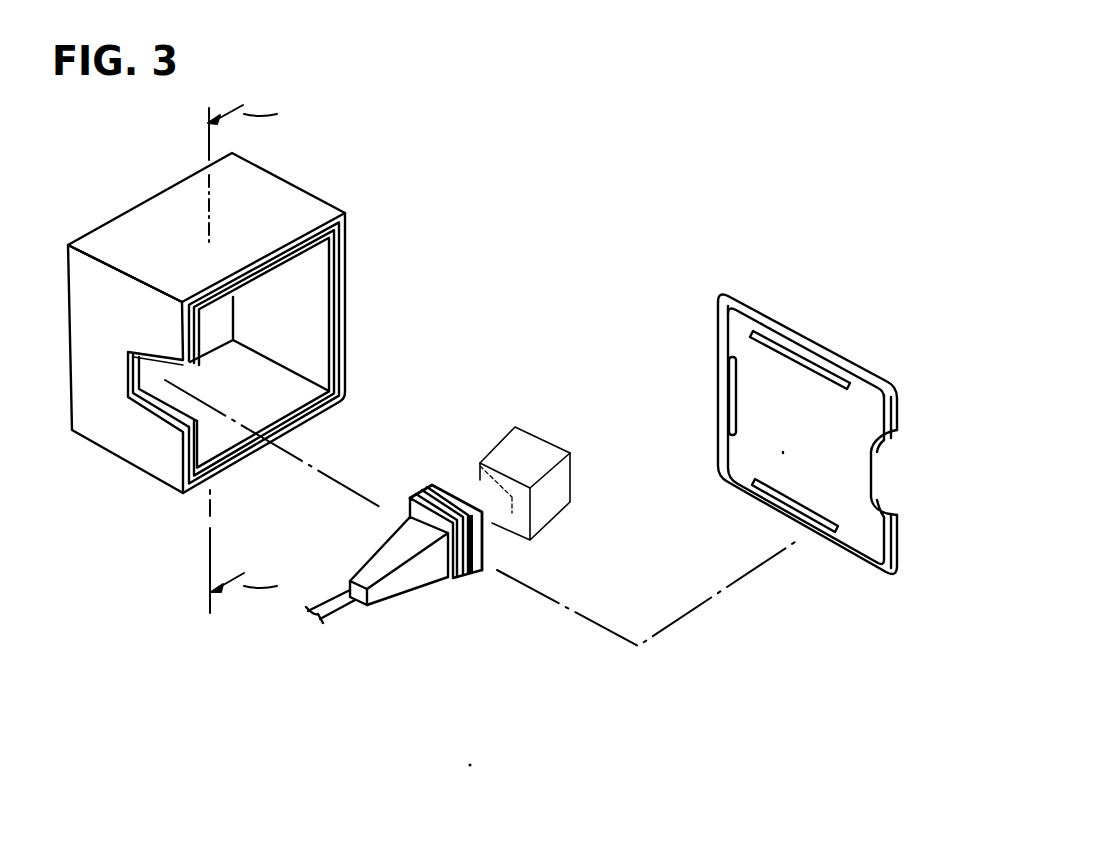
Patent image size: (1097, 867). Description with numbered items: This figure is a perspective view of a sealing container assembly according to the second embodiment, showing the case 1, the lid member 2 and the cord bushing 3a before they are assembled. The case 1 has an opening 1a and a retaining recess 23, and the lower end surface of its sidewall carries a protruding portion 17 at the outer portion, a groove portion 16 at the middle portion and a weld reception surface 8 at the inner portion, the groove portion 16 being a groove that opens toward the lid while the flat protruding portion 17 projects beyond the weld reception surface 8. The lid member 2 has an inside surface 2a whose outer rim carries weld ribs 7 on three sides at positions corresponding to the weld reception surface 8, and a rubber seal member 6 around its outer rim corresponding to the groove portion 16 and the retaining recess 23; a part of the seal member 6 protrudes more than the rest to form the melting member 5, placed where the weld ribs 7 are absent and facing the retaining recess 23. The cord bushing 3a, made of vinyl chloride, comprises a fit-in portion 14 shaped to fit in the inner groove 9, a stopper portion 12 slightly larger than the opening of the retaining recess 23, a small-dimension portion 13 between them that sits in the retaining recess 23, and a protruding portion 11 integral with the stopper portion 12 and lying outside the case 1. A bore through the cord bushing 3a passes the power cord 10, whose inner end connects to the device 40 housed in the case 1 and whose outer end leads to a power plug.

The case 1 is at (155, 212).
The opening 1a is at (293, 293).
The protruding portion 17 is at (346, 272).
The groove portion 16 is at (335, 290).
The weld reception surface 8 is at (330, 308).
The inner groove 9 is at (162, 390).
The retaining recess 23 is at (180, 393).
The cord bushing 3a is at (454, 573).
The power cord 10 is at (328, 628).
The protruding portion 11 is at (389, 587).
The stopper portion 12 is at (455, 580).
The small-dimension portion 13 is at (482, 570).
The fit-in portion 14 is at (474, 495).
The device 40 is at (547, 507).
The lid member 2 is at (751, 435).
The inside surface 2a is at (783, 452).
The melting member 5 is at (872, 512).
The seal member 6 is at (757, 305).
The weld ribs 7 is at (802, 352).